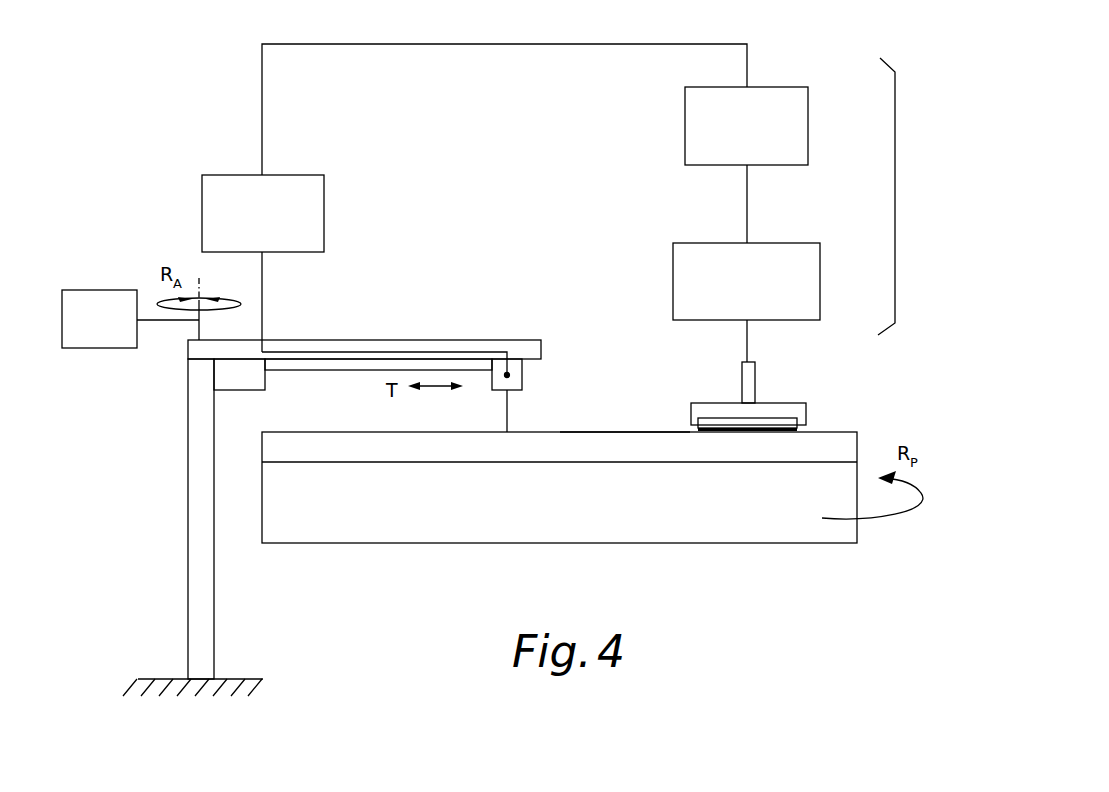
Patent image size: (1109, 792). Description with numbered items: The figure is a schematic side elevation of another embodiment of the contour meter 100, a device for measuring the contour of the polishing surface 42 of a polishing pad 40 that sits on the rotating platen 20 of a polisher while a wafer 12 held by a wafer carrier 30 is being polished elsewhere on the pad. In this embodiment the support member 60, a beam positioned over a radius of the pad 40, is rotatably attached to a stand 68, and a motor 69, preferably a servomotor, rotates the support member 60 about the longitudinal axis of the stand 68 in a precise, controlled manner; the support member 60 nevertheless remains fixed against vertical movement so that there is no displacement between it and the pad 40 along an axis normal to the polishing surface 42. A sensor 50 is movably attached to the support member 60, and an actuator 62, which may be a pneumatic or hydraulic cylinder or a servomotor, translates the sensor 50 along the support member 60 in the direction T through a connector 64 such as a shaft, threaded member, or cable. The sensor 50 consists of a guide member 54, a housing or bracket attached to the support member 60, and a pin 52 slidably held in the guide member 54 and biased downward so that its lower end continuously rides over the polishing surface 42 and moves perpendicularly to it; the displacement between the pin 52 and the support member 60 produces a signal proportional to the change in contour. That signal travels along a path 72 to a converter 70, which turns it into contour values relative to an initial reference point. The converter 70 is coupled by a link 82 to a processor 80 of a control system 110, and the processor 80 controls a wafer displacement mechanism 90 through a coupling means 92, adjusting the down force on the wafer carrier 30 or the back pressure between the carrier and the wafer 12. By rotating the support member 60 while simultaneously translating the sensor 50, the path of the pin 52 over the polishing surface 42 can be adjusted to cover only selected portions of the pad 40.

The contour meter 100 is at (503, 302).
The platen 20 is at (792, 530).
The polishing pad 40 is at (837, 437).
The polishing surface 42 is at (612, 431).
The wafer 12 is at (775, 423).
The wafer carrier 30 is at (800, 410).
The wafer displacement mechanism 90 is at (820, 282).
The coupling means 92 is at (747, 203).
The processor 80 is at (810, 127).
The link 82 is at (515, 43).
The control system 110 is at (896, 187).
The converter 70 is at (217, 175).
The path 72 is at (262, 305).
The motor 69 is at (110, 290).
The support member 60 is at (527, 342).
The connector 64 is at (355, 372).
The guide member 54 is at (500, 383).
The pin 52 is at (508, 423).
The sensor 50 is at (548, 374).
The actuator 62 is at (220, 380).
The stand 68 is at (193, 492).